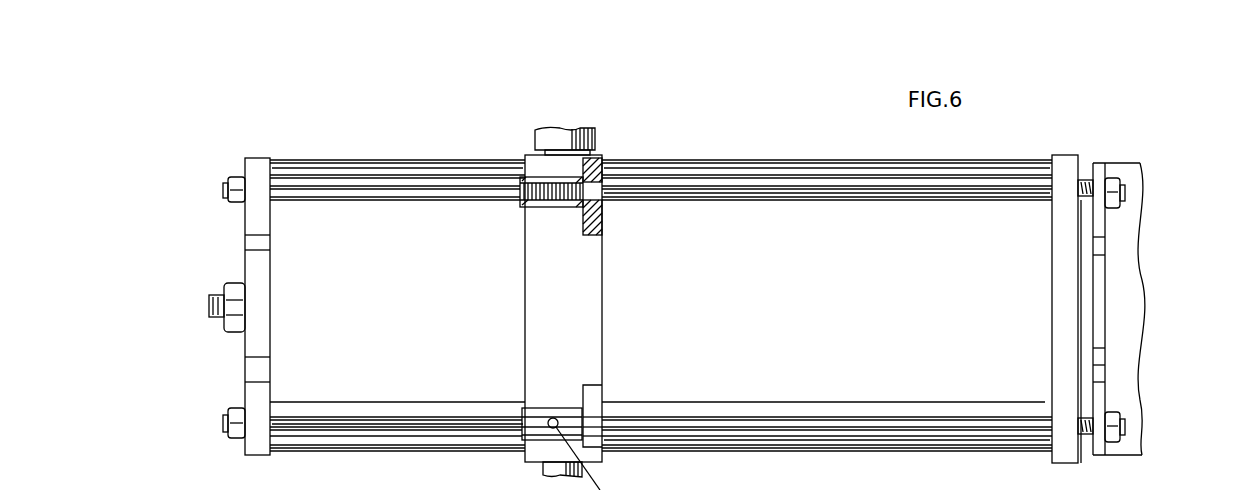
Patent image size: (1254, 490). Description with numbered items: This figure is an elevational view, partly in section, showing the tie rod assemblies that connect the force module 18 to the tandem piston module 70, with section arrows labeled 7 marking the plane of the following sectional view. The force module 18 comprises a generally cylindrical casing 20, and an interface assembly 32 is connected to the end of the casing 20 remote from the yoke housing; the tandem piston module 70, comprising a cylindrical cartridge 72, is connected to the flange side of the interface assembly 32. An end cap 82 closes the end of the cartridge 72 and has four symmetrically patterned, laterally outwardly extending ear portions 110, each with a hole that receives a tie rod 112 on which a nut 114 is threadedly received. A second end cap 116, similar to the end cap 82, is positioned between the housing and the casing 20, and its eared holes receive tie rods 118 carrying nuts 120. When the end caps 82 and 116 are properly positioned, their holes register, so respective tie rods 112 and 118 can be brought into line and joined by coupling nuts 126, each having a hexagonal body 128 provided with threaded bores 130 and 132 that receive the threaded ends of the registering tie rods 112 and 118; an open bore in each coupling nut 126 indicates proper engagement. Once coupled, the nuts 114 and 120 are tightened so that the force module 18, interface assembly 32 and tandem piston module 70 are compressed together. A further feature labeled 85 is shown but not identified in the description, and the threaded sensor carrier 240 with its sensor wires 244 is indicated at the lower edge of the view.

The section line 7- 7 is at (229, 297).
The force module 18 is at (798, 98).
The casing 20 is at (737, 170).
The interface assembly 32 is at (603, 103).
The tandem piston module 70 is at (484, 128).
The cartridge 72 is at (405, 170).
The end cap 82 is at (258, 361).
The lower rod 85 is at (661, 446).
The ear portions 110 is at (491, 487).
The tie rods 112 is at (364, 190).
The nuts 114 is at (238, 188).
The second end cap 116 is at (1097, 405).
The tie rod 118 is at (823, 195).
The nuts 120 is at (1112, 180).
The coupling nuts 126 is at (550, 394).
The body 128 is at (570, 410).
The threaded bore 130 is at (527, 203).
The threaded bore 132 is at (566, 207).
The sensor carrier 240 is at (943, 483).
The wires 244 is at (860, 484).